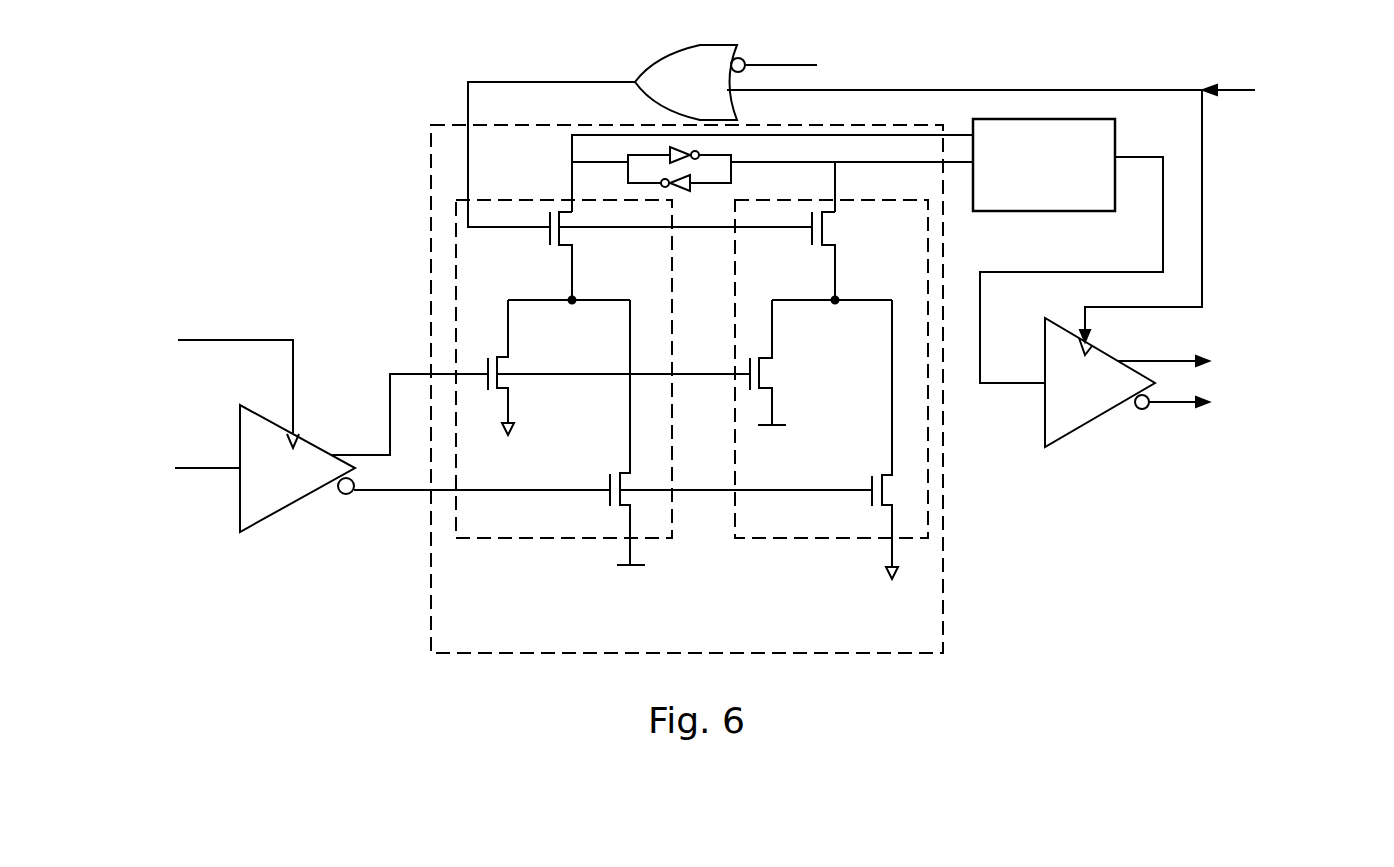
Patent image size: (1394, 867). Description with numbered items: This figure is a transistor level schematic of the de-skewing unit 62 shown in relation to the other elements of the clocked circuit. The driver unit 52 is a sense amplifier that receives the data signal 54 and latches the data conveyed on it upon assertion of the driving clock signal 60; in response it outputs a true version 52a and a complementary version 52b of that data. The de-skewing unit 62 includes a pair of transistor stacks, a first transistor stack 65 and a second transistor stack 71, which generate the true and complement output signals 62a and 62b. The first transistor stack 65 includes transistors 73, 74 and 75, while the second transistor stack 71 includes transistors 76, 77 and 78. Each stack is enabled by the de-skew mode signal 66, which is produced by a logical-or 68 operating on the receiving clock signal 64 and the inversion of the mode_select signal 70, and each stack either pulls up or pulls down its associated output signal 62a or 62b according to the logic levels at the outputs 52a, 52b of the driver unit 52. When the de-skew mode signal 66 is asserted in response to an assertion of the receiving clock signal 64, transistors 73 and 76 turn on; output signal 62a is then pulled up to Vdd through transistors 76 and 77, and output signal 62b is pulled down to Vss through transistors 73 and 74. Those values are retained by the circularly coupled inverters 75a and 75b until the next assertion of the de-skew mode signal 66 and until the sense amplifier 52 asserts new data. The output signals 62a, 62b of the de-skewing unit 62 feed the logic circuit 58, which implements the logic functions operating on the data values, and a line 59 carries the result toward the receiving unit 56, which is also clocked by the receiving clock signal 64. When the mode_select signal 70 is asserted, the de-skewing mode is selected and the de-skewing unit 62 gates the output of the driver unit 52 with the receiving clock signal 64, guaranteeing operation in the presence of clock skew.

The driver unit 52 is at (273, 482).
The true output 52a is at (360, 452).
The complementary output 52b is at (378, 492).
The data signal 54 is at (210, 471).
The receiving unit 56 is at (1068, 399).
The logic circuit 58 is at (1032, 202).
The logic circuit output line 59 is at (1040, 272).
The driving clock signal 60 is at (210, 338).
The de-skewing unit 62 is at (495, 642).
The true output signal 62a is at (857, 164).
The complement output signal 62b is at (768, 136).
The receiving clock signal 64 is at (1233, 88).
The first transistor stack 65 is at (673, 288).
The de-skew mode signal 66 is at (585, 81).
The logical-or 68 is at (708, 92).
The mode_select signal 70 is at (775, 63).
The second transistor stack 71 is at (735, 333).
The transistor 73 is at (561, 218).
The transistor 74 is at (499, 362).
The transistor 75 is at (621, 478).
The inverter 75a is at (668, 152).
The inverter 75b is at (675, 188).
The transistor 76 is at (826, 229).
The transistor 77 is at (765, 368).
The transistor 78 is at (885, 490).